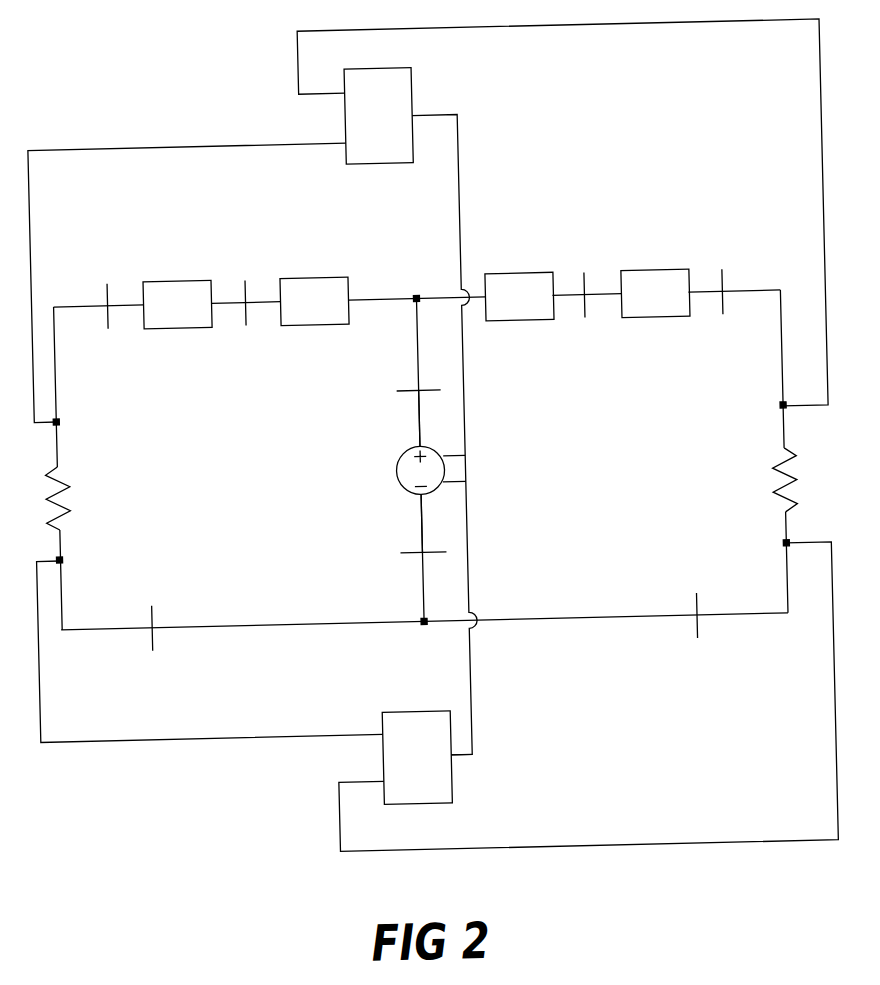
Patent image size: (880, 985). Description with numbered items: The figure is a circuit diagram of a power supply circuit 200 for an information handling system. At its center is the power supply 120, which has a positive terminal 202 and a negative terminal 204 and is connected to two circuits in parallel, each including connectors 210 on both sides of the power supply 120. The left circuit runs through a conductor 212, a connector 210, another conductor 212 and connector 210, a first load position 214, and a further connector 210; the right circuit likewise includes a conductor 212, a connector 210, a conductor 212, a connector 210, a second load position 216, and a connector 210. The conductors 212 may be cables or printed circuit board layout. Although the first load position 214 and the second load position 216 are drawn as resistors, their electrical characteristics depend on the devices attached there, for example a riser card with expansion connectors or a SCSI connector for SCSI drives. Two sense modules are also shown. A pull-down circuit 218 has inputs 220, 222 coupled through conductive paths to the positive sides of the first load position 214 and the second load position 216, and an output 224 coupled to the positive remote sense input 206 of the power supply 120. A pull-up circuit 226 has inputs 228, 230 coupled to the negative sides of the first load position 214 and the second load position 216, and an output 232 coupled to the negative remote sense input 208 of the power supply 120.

The power supply circuit 200 is at (431, 456).
The power supply 120 is at (382, 446).
The positive terminal 202 is at (413, 439).
The negative terminal 204 is at (415, 501).
The positive remote sense input 206 is at (444, 455).
The negative remote sense input 208 is at (443, 483).
The connector 210 is at (118, 289).
The conductor 212 is at (416, 299).
The first load position 214 is at (82, 474).
The second load position 216 is at (762, 473).
The pull-down circuit 218 is at (378, 116).
The input 220 is at (348, 145).
The input 222 is at (349, 97).
The output 224 is at (427, 110).
The pull-up circuit 226 is at (417, 758).
The input 228 is at (372, 730).
The input 230 is at (371, 780).
The output 232 is at (449, 762).